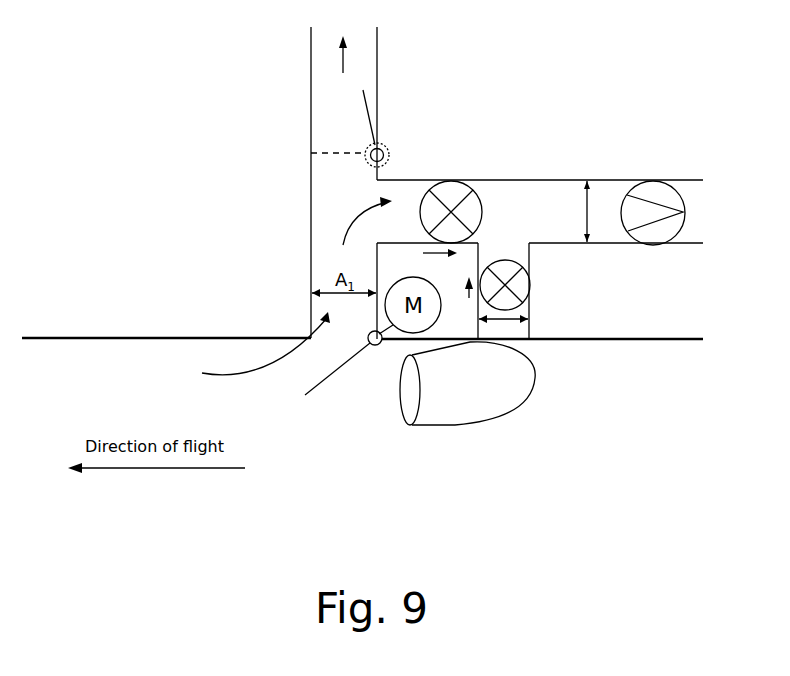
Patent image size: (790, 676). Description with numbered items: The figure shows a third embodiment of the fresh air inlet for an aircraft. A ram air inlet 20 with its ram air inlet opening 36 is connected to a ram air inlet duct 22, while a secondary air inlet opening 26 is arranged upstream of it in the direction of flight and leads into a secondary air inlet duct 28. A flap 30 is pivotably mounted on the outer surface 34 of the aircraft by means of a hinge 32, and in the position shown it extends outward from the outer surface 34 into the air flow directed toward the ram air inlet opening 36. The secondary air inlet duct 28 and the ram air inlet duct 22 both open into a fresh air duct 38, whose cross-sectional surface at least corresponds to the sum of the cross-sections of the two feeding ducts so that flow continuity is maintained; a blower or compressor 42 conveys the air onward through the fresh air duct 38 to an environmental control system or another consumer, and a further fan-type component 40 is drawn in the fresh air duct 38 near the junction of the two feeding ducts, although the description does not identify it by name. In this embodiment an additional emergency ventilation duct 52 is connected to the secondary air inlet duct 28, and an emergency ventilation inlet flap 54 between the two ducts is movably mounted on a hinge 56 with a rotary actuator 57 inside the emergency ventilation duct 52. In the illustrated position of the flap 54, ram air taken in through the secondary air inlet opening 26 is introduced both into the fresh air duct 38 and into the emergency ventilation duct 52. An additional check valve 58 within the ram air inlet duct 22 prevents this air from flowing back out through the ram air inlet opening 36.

The ram air inlet 20 is at (513, 400).
The ram air inlet duct 22 is at (532, 312).
The secondary air inlet opening 26 is at (327, 357).
The secondary air inlet duct 28 is at (310, 226).
The flap 30 is at (318, 388).
The hinge 32 is at (382, 355).
The outer surface 34 is at (68, 339).
The ram air inlet opening 36 is at (403, 410).
The fresh air duct 38 is at (607, 190).
The fan 40 is at (452, 190).
The blower or compressor 42 is at (655, 190).
The emergency ventilation duct 52 is at (318, 93).
The emergency ventilation inlet flap 54 is at (377, 100).
The hinge 56 is at (384, 146).
The rotary actuator 57 is at (370, 165).
The check valve 58 is at (522, 283).